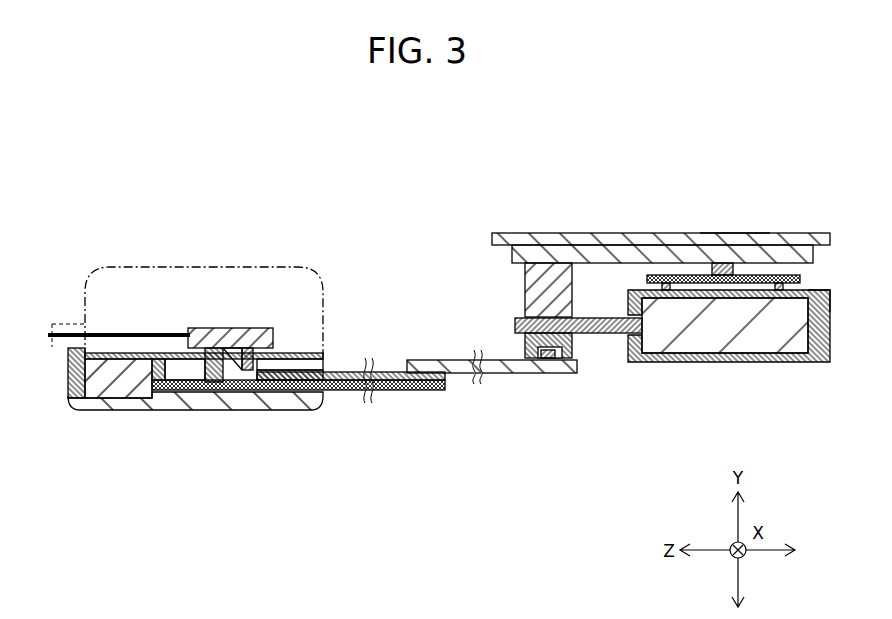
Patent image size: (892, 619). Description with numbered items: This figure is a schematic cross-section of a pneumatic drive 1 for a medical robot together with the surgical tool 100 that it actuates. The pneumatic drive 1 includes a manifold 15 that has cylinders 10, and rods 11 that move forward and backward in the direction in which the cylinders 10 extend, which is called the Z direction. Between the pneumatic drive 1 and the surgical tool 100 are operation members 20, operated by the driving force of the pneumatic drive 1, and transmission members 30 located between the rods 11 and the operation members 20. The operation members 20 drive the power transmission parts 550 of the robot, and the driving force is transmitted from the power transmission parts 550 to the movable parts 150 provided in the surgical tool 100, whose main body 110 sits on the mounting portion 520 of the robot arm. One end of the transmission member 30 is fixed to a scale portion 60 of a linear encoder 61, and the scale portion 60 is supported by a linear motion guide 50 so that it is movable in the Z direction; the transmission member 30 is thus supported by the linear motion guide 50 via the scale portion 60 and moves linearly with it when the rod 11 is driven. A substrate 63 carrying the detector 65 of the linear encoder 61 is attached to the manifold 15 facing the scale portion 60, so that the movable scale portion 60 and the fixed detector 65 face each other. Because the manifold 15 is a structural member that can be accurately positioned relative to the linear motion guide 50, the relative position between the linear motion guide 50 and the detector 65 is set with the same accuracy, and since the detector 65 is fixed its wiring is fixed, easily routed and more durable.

The pneumatic drive 1 is at (767, 172).
The cylinder 10 is at (707, 356).
The rod 11 is at (616, 336).
The manifold 15 is at (818, 298).
The operation member 20 is at (501, 374).
The transmission member 30 is at (525, 290).
The linear motion guide 50 is at (627, 240).
The scale portion 60 is at (672, 257).
The linear encoder 61 is at (734, 232).
The substrate 63 is at (780, 283).
The detector 65 is at (720, 268).
The surgical tool 100 is at (231, 262).
The main body 110 is at (154, 263).
The movable part 150 is at (265, 328).
The mounting portion 520 is at (147, 410).
The power transmission part 550 is at (348, 390).